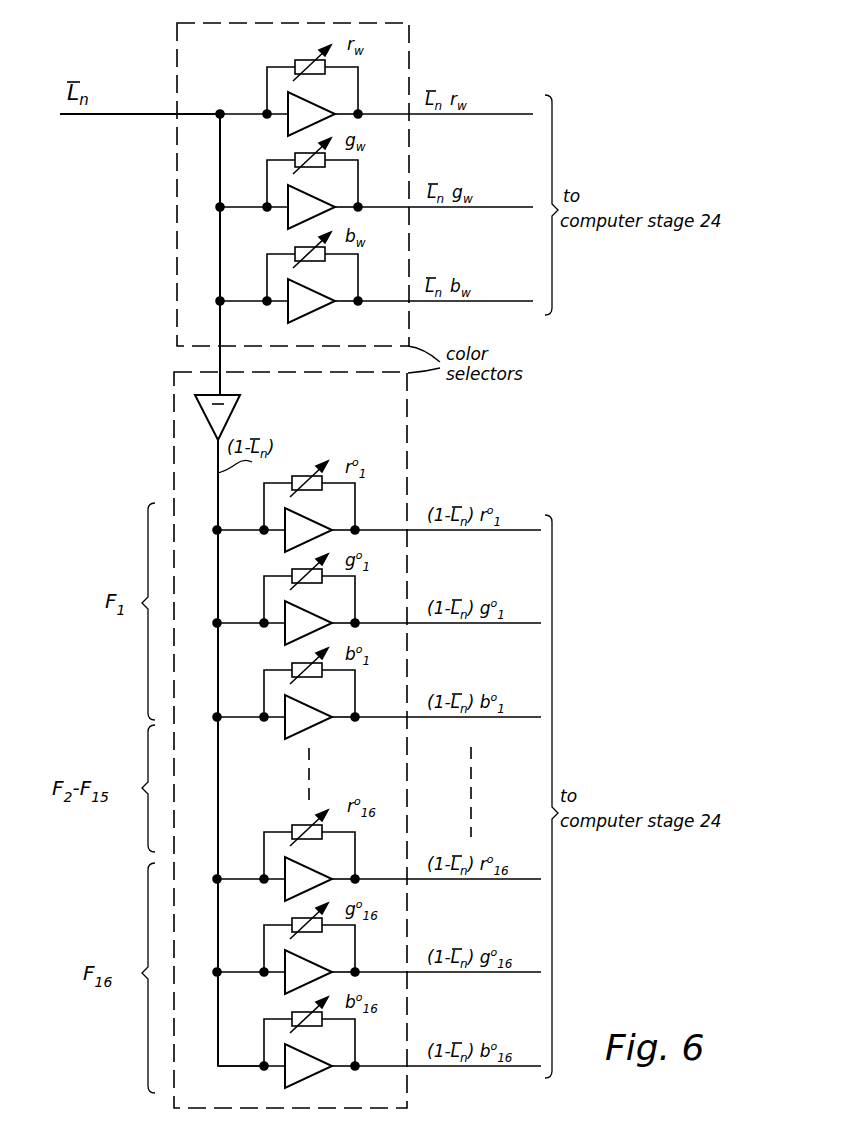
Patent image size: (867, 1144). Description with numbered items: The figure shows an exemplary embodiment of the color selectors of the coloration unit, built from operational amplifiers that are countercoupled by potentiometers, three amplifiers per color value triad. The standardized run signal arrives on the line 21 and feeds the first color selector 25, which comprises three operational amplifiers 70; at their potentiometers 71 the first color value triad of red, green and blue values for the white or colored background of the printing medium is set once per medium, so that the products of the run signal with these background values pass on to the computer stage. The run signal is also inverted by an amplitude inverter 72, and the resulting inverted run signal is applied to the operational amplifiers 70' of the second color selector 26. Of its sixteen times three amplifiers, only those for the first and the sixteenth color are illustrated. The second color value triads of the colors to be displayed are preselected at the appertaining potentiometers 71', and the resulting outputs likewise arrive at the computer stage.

The line 21 is at (143, 114).
The first color selector 25 is at (188, 227).
The second color selector 26 is at (190, 438).
The operational amplifier 70 is at (321, 105).
The potentiometer 71 is at (296, 57).
The amplitude inverter 72 is at (236, 410).
The operational amplifier 70' is at (321, 524).
The potentiometer 71' is at (313, 464).